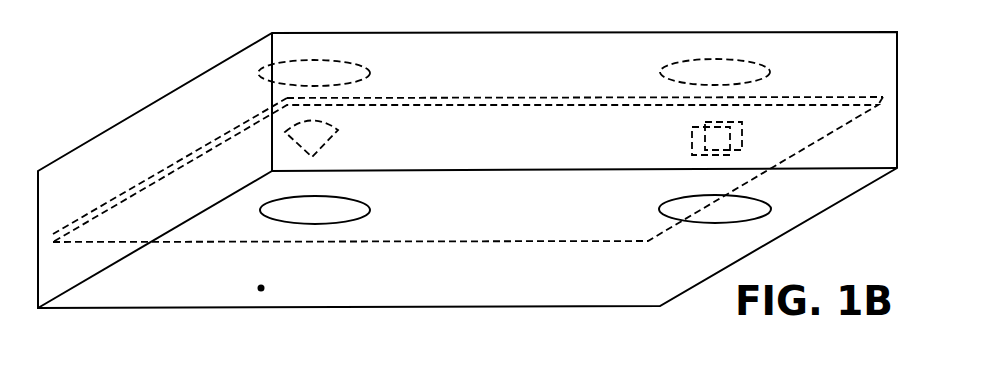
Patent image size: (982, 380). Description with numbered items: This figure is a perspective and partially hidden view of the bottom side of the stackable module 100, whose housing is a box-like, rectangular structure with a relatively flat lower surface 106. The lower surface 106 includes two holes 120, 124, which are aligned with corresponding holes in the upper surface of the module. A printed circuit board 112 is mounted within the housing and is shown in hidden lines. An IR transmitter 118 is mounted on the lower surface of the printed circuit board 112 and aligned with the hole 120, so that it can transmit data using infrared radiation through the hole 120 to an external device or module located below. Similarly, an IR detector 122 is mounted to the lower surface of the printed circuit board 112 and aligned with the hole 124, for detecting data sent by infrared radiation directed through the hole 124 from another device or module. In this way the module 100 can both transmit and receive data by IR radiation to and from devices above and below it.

The stackable module 100 is at (170, 45).
The lower surface 106 is at (261, 291).
The printed circuit board 112 is at (423, 242).
The IR transmitter 118 is at (333, 137).
The hole 120 is at (370, 215).
The IR detector 122 is at (693, 152).
The hole 124 is at (660, 212).